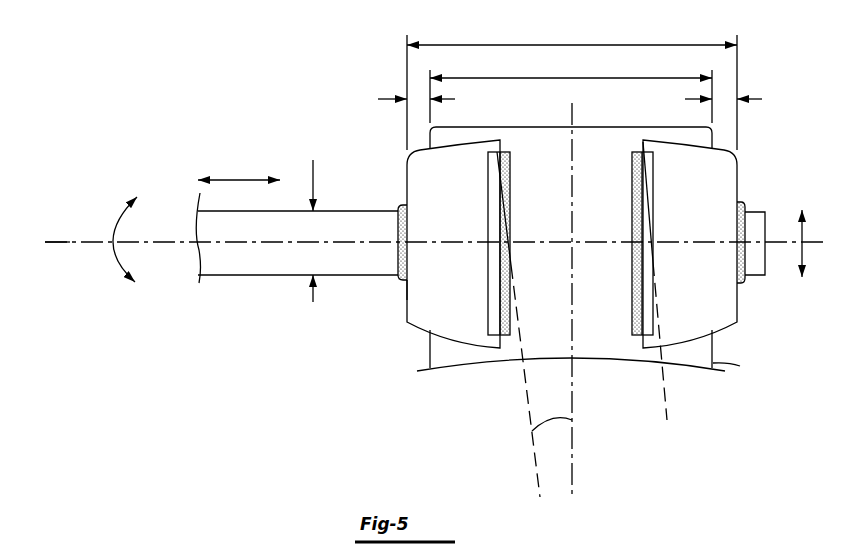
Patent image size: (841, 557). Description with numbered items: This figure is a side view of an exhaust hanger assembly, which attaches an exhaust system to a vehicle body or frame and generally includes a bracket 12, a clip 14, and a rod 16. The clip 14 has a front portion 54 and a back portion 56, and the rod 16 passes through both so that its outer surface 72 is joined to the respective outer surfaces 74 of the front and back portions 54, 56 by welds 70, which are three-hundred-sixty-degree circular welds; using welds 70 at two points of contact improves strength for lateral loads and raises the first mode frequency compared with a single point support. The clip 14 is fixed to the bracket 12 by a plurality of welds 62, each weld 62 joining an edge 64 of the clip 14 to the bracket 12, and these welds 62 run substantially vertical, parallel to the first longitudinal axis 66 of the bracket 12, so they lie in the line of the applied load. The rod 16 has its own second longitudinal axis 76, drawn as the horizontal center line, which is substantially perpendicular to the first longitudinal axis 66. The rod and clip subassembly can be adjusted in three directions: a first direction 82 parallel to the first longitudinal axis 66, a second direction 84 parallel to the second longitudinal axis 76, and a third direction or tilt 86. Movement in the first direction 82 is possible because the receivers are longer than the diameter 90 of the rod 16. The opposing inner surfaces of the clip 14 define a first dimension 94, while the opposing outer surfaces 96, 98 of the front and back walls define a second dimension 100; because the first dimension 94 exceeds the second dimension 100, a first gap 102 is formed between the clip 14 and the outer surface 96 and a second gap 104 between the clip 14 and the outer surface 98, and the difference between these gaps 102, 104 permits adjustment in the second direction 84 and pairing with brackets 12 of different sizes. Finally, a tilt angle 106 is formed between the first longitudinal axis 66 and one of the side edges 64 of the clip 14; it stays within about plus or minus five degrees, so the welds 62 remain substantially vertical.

The bracket 12 is at (508, 352).
The clip 14 is at (463, 330).
The rod 16 is at (357, 220).
The front portion 54 is at (427, 303).
The back portion 56 is at (703, 313).
The welds 62 is at (506, 172).
The edge 64 is at (643, 349).
The first longitudinal axis 66 is at (574, 207).
The welds 70 is at (405, 210).
The outer surface 72 is at (242, 268).
The outer surfaces 74 is at (411, 292).
The second longitudinal axis 76 is at (64, 242).
The first direction 82 is at (802, 238).
The second direction 84 is at (230, 178).
The third direction 86 is at (100, 210).
The diameter 90 is at (314, 221).
The first dimension 94 is at (505, 44).
The outer surface 96 is at (430, 353).
The outer surface 98 is at (727, 372).
The second dimension 100 is at (525, 78).
The first gap 102 is at (401, 99).
The second gap 104 is at (742, 99).
The tilt angle 106 is at (557, 418).